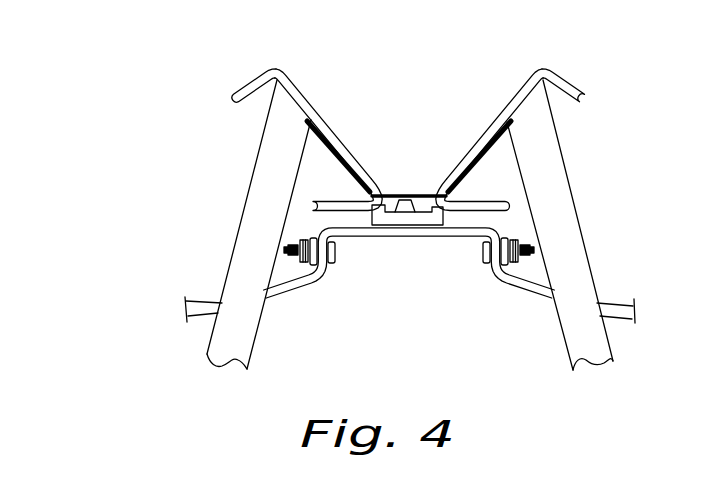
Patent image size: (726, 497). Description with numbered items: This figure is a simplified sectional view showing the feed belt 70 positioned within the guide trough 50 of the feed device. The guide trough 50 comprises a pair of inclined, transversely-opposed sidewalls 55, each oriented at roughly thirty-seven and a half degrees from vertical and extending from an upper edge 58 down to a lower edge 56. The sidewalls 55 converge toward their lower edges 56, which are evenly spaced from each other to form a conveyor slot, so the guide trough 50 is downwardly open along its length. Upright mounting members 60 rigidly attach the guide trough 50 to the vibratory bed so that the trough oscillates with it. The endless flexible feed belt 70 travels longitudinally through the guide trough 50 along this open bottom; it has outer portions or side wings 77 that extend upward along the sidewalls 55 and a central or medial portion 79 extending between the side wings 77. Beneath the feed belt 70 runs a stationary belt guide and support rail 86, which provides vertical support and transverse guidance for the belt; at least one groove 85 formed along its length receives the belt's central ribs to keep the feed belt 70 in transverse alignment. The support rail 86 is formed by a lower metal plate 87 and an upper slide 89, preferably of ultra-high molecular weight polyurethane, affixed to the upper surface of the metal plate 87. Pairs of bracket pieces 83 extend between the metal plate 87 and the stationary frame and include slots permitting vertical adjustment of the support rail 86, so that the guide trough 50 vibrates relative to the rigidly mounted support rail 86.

The guide trough 50 is at (536, 117).
The sidewalls 55 is at (302, 90).
The lower edge 56 is at (360, 193).
The upper edge 58 is at (270, 63).
The upright mounting members 60 is at (245, 243).
The feed belt 70 is at (434, 181).
The side wings 77 is at (353, 150).
The medial portion 79 is at (414, 190).
The bracket pieces 83 is at (290, 296).
The groove 85 is at (432, 228).
The support rail 86 is at (367, 245).
The metal plate 87 is at (490, 227).
The upper slide 89 is at (395, 218).